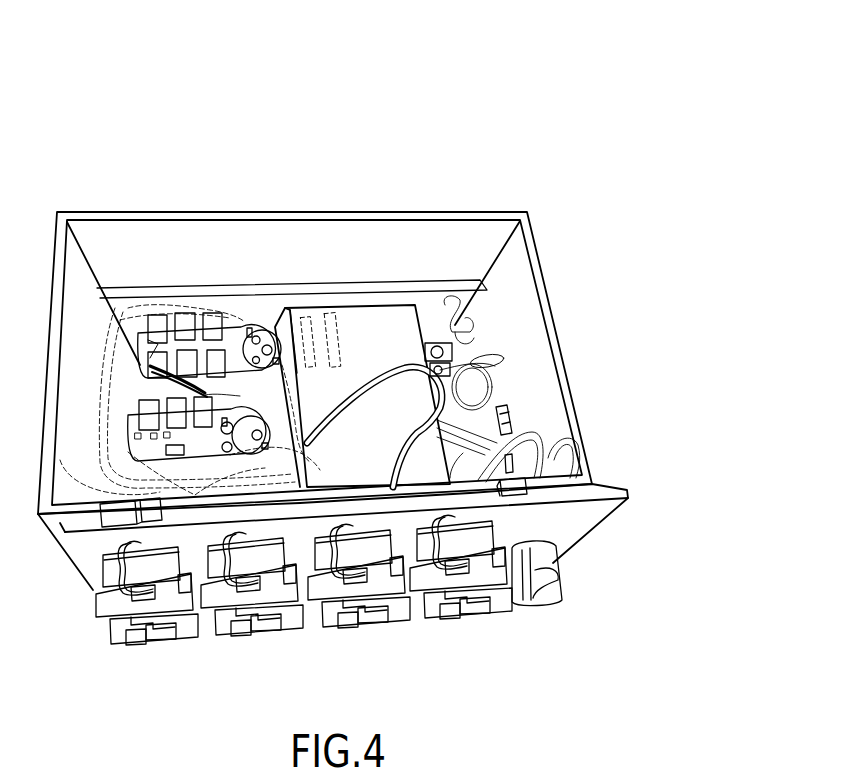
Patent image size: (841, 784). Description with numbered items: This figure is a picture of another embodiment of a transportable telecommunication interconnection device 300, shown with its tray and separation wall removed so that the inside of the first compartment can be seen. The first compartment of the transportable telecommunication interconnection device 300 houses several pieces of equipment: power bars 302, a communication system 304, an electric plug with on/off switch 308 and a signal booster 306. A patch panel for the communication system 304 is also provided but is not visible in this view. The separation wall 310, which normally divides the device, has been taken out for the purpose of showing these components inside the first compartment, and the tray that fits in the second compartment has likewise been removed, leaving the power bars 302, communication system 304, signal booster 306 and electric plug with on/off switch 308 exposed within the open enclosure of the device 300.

The transportable telecommunication interconnection device 300 is at (365, 78).
The power bars 302 is at (213, 330).
The communication system 304 is at (372, 327).
The signal booster 306 is at (502, 413).
The electric plug with on/off switch 308 is at (438, 347).
The separation wall 310 is at (200, 537).